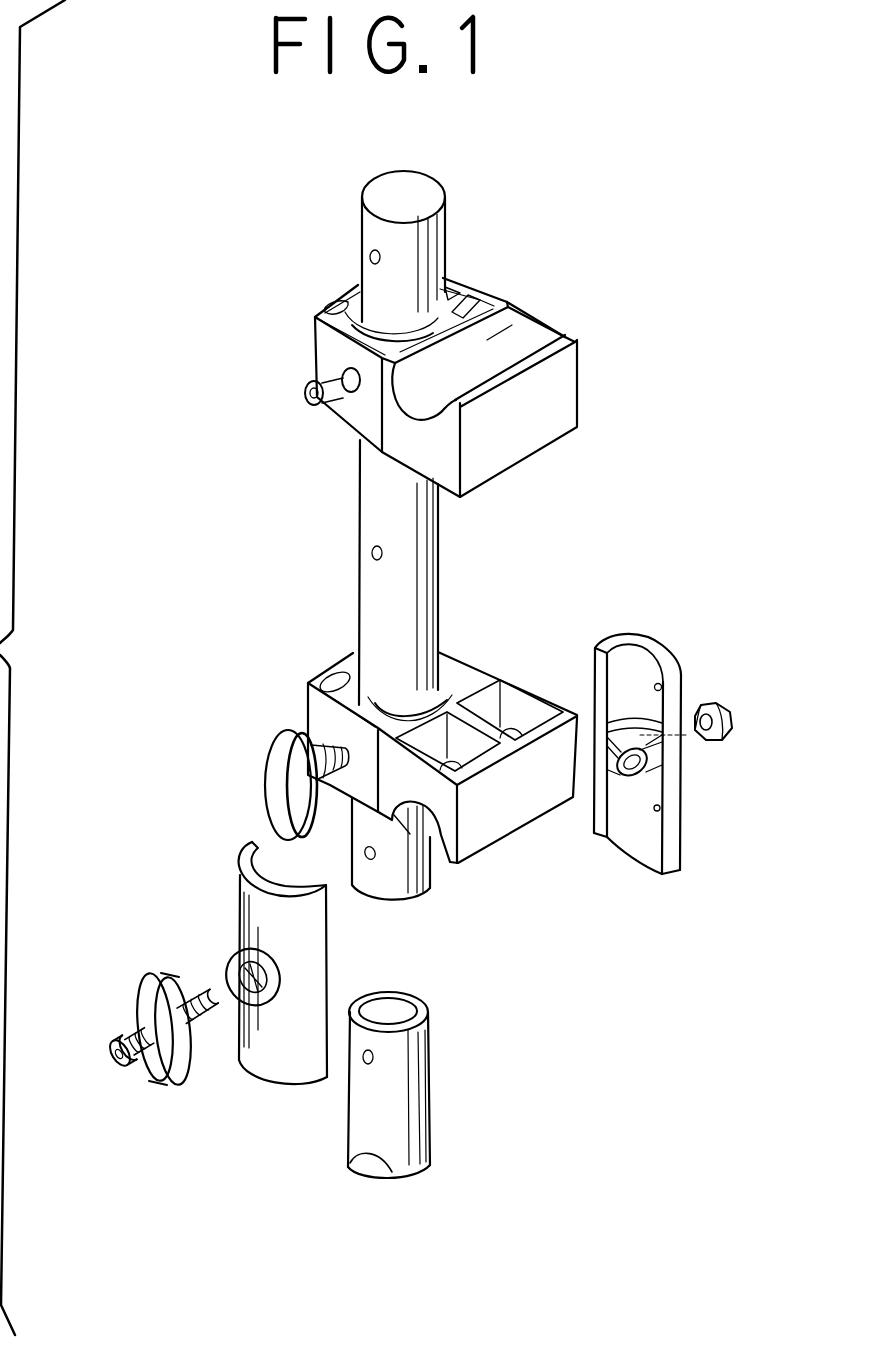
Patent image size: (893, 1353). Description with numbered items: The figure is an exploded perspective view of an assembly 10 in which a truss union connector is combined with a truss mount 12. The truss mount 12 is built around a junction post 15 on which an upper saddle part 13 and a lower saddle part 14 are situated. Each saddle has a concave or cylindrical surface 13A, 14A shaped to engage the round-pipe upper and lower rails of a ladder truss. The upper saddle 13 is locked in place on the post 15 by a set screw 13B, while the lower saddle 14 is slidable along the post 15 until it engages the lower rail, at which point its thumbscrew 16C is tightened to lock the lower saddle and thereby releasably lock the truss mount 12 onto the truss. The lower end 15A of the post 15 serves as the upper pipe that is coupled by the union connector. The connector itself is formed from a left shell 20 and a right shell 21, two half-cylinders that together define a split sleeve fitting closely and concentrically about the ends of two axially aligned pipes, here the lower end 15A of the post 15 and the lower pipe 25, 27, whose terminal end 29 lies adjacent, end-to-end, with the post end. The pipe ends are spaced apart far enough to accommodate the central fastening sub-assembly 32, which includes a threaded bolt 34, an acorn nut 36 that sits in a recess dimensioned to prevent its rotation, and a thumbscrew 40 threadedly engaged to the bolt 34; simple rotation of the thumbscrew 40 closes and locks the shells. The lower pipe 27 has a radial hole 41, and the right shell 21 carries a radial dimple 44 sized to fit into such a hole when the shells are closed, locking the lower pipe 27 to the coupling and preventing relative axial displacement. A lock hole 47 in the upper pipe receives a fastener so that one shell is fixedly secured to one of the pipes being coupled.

The assembly 10 is at (625, 542).
The truss mount 12 is at (338, 540).
The upper saddle part 13 is at (548, 387).
The concave or cylindrical surface 13A is at (527, 353).
The set screw 13B is at (305, 400).
The lower saddle part 14 is at (533, 683).
The concave or cylindrical surface 14A is at (447, 862).
The junction post 15 is at (403, 552).
The lower end of post 15A is at (395, 900).
The thumbscrew 16C is at (292, 797).
The left shell 20 is at (283, 917).
The right shell 21 is at (683, 845).
The lower pipe 25 is at (430, 1035).
The lower pipe 27 is at (390, 1135).
The terminal end 29 is at (410, 992).
The central fastening sub-assembly 32 is at (283, 1097).
The threaded bolt 34 is at (137, 1006).
The acorn nut 36 is at (718, 708).
The thumbscrew 40 is at (168, 1073).
The radial hole 41 is at (385, 1072).
The radial dimple 44 is at (648, 817).
The lock hole 47 is at (657, 683).